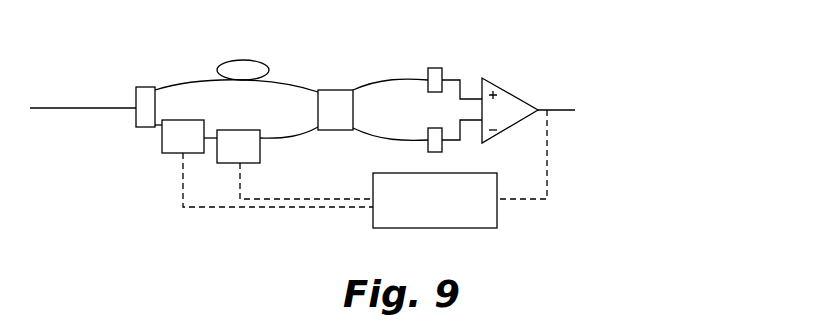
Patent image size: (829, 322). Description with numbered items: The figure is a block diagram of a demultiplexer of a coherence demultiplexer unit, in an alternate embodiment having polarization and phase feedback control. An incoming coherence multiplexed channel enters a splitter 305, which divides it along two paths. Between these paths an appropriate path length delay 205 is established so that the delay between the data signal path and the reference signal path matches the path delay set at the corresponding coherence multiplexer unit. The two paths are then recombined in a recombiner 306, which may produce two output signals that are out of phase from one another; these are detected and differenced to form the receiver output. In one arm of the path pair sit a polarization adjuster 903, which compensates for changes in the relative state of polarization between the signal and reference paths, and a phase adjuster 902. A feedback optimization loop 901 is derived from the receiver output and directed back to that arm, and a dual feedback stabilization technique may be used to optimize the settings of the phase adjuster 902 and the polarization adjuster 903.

The splitter 305 is at (138, 84).
The path length delay 205 is at (243, 57).
The recombiner 306 is at (335, 88).
The polarization adjuster 903 is at (160, 145).
The phase adjuster 902 is at (263, 157).
The feedback optimization loop 901 is at (498, 228).